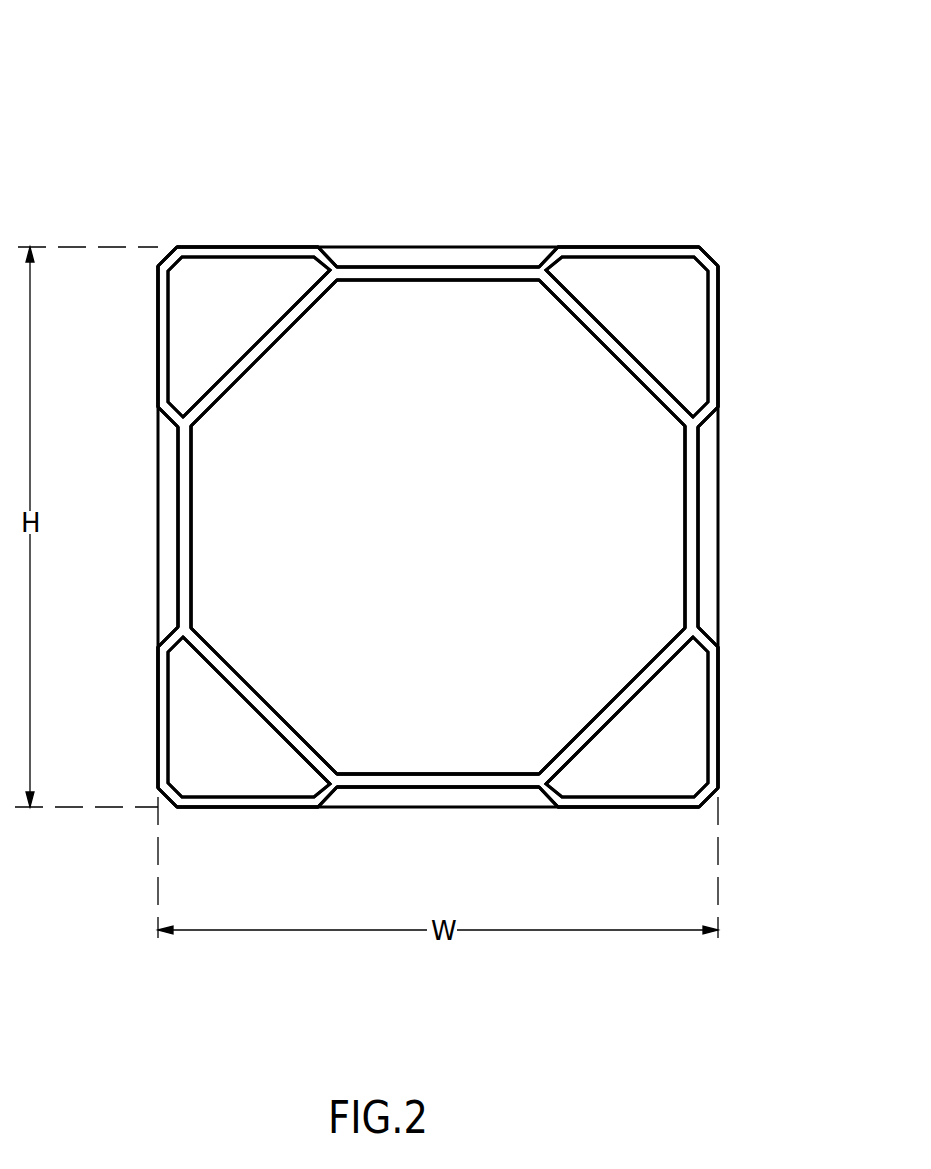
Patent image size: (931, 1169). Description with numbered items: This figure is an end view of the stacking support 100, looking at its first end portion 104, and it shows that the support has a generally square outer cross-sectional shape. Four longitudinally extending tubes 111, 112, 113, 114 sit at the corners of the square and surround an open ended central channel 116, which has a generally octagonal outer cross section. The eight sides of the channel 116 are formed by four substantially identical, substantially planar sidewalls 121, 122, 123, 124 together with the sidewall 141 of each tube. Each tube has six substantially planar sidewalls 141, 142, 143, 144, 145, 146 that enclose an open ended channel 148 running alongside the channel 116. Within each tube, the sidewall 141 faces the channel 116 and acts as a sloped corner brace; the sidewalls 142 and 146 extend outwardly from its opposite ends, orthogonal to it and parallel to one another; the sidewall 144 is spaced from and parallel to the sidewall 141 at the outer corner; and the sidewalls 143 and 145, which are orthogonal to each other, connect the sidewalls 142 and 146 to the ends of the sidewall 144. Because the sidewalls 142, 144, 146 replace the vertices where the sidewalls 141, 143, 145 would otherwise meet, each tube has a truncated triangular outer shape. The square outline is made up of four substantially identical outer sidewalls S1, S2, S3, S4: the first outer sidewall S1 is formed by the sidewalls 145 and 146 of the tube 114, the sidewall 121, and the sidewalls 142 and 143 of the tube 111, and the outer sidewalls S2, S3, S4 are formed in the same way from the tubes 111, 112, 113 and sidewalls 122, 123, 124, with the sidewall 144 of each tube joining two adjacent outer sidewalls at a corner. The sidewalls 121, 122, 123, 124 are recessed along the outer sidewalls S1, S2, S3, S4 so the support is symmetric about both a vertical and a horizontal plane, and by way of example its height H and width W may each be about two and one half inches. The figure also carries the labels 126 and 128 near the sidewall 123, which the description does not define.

The stacking support 100 is at (218, 92).
The first end portion 104 is at (700, 527).
The tube 111 is at (720, 290).
The tube 112 is at (712, 695).
The tube 113 is at (278, 808).
The tube 114 is at (157, 293).
The channel 116 is at (471, 524).
The sidewall 121 is at (420, 265).
The sidewall 122 is at (683, 515).
The sidewall 123 is at (433, 770).
The sidewall 124 is at (197, 519).
The outer surface of side wall segment 126 is at (438, 788).
The inner surface of side wall segment 128 is at (505, 770).
The sidewall 141 is at (268, 350).
The sidewall 142 is at (545, 262).
The sidewall 143 is at (157, 330).
The sidewall 144 is at (163, 258).
The sidewall 145 is at (250, 245).
The sidewall 146 is at (332, 255).
The channel 148 is at (235, 303).
The first outer sidewall S1 is at (477, 208).
The second outer sidewall S2 is at (742, 492).
The third outer sidewall S3 is at (473, 837).
The fourth outer sidewall S4 is at (158, 505).